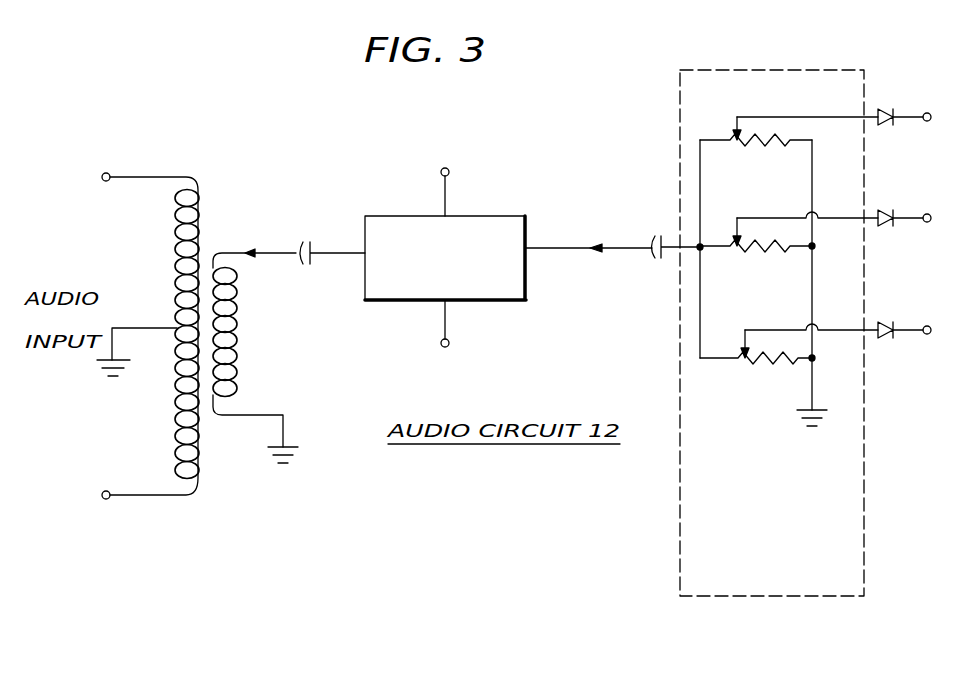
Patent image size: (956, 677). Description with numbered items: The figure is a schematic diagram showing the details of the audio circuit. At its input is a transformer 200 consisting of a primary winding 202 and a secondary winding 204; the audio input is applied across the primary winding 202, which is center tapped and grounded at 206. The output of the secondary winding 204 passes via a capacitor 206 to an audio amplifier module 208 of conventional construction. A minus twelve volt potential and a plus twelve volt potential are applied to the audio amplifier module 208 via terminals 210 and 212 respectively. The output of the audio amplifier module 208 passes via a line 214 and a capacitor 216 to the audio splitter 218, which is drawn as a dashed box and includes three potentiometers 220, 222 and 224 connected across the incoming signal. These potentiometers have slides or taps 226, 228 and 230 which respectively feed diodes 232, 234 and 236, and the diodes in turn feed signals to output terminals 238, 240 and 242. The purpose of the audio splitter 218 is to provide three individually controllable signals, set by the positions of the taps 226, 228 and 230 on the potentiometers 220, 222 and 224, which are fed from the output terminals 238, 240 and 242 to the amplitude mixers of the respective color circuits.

The transformer 200 is at (205, 327).
The primary winding 202 is at (177, 228).
The secondary winding 204 is at (238, 306).
The capacitor 206 is at (148, 378).
The audio amplifier module 208 is at (522, 217).
The terminal 210 is at (444, 349).
The terminal 212 is at (444, 166).
The line 214 is at (572, 256).
The capacitor 216 is at (653, 238).
The audio splitter 218 is at (807, 331).
The potentiometer 220 is at (770, 152).
The potentiometer 222 is at (768, 254).
The potentiometer 224 is at (770, 366).
The slide or tap 226 is at (733, 132).
The slide or tap 228 is at (736, 238).
The slide or tap 230 is at (743, 350).
The diode 232 is at (888, 108).
The diode 234 is at (888, 210).
The diode 236 is at (890, 322).
The output terminal 238 is at (912, 132).
The output terminal 240 is at (929, 222).
The output terminal 242 is at (929, 334).